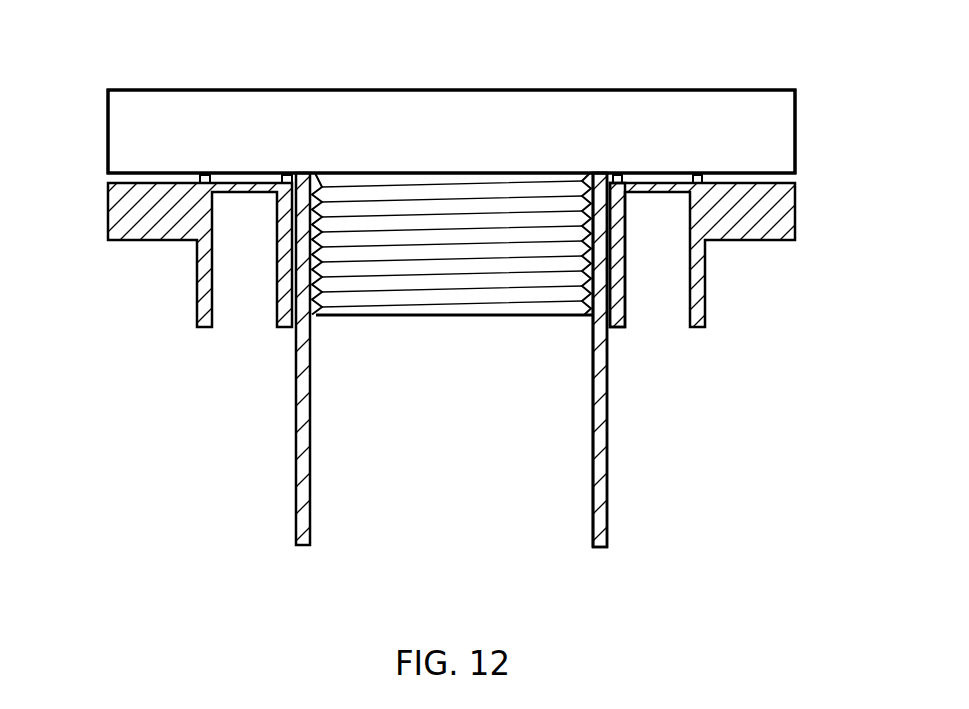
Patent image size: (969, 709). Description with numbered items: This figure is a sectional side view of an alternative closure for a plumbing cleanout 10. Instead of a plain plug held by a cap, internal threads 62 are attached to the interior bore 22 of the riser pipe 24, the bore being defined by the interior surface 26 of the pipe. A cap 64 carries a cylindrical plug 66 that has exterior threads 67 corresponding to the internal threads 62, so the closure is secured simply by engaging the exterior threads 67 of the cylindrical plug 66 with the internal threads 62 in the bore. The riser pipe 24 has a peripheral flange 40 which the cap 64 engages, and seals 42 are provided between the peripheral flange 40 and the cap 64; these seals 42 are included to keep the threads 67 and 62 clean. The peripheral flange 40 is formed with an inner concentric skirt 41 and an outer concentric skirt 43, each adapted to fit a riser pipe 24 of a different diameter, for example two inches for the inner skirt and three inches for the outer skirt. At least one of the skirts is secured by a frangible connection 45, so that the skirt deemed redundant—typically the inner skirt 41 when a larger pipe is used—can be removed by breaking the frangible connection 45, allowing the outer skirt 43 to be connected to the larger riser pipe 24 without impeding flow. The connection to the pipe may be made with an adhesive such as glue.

The plumbing cleanout 10 is at (172, 68).
The cap 64 is at (772, 142).
The peripheral flange 40 is at (118, 218).
The outer concentric skirt 43 is at (707, 330).
The inner concentric skirt 41 is at (627, 330).
The frangible connection 45 is at (687, 198).
The seals 42 is at (686, 174).
The interior bore 22 is at (342, 528).
The riser pipe 24 is at (610, 492).
The interior surface 26 is at (590, 517).
The internal threads 62 is at (597, 235).
The exterior threads 67 is at (485, 285).
The cylindrical plug 66 is at (463, 320).